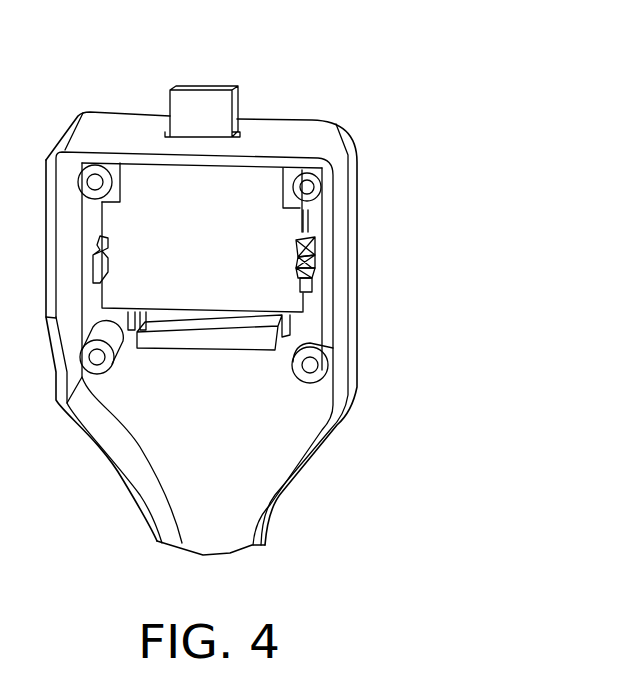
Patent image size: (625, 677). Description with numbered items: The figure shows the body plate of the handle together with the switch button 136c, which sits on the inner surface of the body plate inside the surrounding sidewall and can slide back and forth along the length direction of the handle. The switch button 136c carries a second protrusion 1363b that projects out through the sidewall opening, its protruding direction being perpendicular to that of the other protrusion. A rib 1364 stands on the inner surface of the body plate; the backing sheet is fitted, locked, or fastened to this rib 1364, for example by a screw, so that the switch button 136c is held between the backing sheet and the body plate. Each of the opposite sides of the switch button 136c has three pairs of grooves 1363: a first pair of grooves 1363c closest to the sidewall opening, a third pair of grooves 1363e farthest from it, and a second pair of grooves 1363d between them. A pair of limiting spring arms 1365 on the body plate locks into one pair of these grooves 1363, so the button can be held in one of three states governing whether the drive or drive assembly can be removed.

The switch button 136c is at (147, 182).
The second protrusion 1363b is at (200, 103).
The rib 1364 is at (304, 185).
The first pair of grooves 1363c is at (305, 232).
The second pair of grooves 1363d is at (304, 252).
The third pair of grooves 1363e is at (305, 273).
The grooves 1363 is at (414, 224).
The limiting spring arms 1365 is at (312, 282).